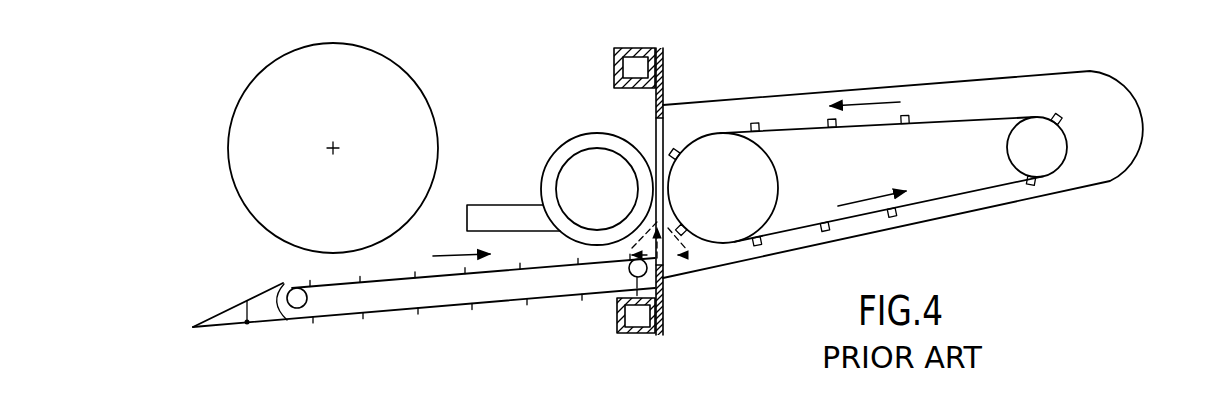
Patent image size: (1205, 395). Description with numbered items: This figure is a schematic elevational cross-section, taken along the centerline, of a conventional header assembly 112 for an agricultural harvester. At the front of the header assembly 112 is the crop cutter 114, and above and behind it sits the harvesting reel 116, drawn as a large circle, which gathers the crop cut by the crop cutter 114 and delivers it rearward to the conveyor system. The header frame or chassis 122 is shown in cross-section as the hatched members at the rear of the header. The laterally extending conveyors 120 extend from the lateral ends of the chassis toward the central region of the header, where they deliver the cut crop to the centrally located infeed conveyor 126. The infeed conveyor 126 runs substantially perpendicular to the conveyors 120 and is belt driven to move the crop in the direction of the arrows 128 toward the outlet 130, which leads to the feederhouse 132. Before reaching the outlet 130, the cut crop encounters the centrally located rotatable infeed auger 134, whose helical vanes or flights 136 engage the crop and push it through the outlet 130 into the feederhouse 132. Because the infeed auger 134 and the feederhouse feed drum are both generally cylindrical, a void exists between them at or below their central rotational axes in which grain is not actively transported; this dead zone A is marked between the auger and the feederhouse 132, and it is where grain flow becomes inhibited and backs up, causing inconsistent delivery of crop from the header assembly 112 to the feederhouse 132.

The header assembly 112 is at (148, 107).
The crop cutter 114 is at (217, 313).
The harvesting reel 116 is at (263, 68).
The laterally extending conveyors 120 is at (510, 205).
The header frame or chassis 122 is at (645, 47).
The infeed conveyor 126 is at (388, 311).
The arrows 128 is at (433, 256).
The outlet 130 is at (655, 133).
The feederhouse 132 is at (804, 93).
The infeed auger 134 is at (622, 199).
The helical vanes or flights 136 is at (558, 148).
The dead zone A is at (673, 258).